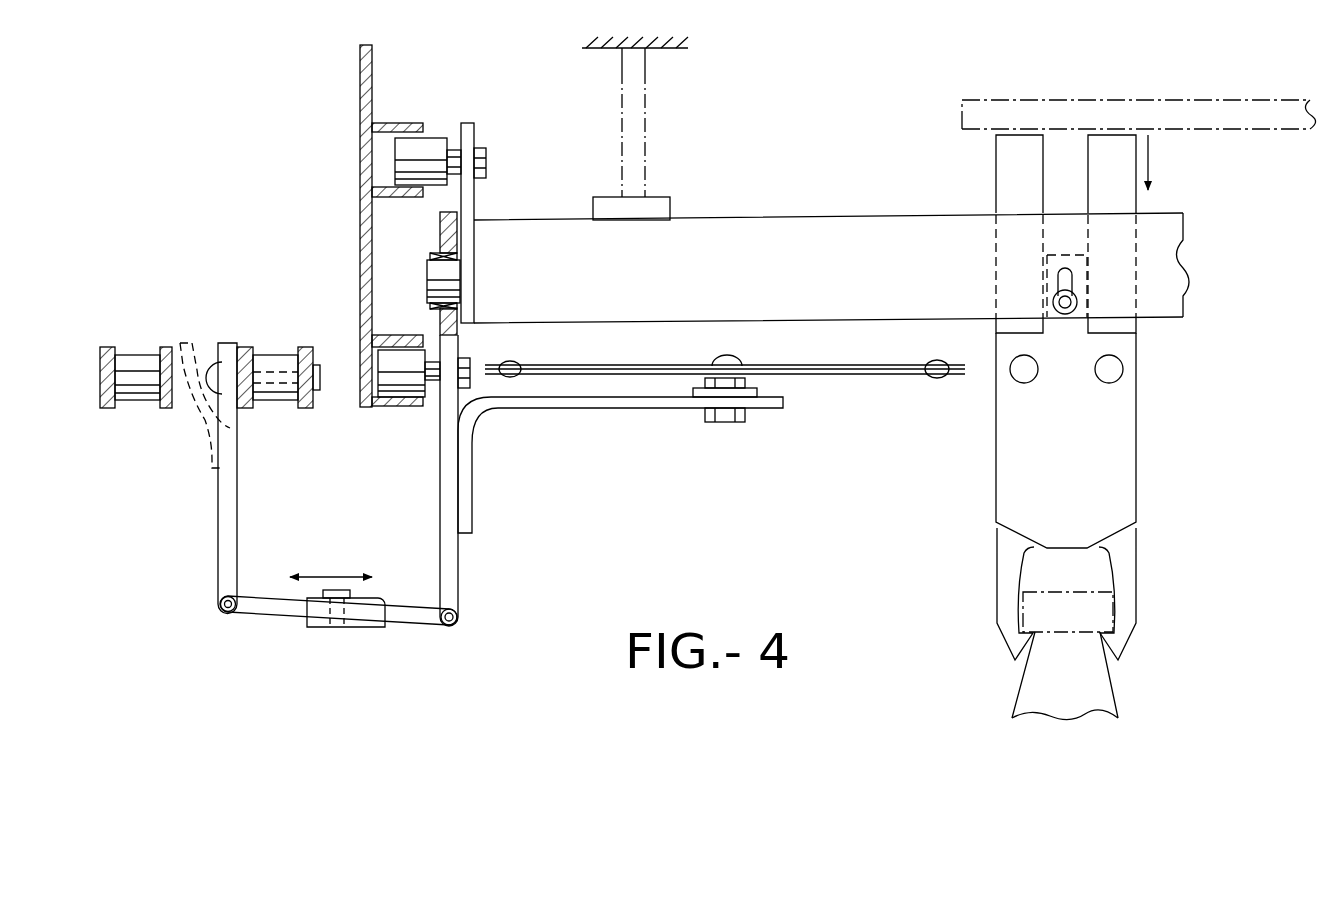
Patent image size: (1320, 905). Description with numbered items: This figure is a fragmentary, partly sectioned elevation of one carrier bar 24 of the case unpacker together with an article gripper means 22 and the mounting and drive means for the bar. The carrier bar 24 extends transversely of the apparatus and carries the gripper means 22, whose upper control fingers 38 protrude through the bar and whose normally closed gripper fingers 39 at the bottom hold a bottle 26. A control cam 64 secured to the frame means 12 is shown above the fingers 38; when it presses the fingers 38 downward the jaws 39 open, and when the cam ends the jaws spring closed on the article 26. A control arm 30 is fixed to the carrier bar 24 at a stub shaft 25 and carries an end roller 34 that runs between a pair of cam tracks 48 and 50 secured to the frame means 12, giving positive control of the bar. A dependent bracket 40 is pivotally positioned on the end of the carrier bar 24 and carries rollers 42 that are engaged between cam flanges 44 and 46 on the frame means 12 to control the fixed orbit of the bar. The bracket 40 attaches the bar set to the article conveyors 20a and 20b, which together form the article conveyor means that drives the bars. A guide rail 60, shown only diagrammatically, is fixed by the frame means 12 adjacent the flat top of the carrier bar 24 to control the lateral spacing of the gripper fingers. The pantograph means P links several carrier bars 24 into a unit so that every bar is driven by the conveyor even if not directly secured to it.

The frame means 12 is at (357, 103).
The conveyor 20a is at (137, 347).
The conveyor 20b is at (278, 347).
The article gripper means 22 is at (994, 484).
The carrier bar 24 is at (742, 215).
The stub shaft 25 is at (432, 281).
The bottle 26 is at (1033, 683).
The control arm 30 is at (476, 206).
The roller 34 is at (400, 150).
The control finger 38 is at (997, 187).
The gripper finger 39 is at (997, 578).
The dependent bracket 40 is at (459, 561).
The roller 42 is at (382, 382).
The cam flange 44 is at (385, 335).
The cam flange 46 is at (388, 406).
The cam track 48 is at (393, 123).
The cam track 50 is at (413, 197).
The guide rail 60 is at (655, 197).
The control cam 64 is at (1037, 98).
The pantograph means P is at (838, 378).